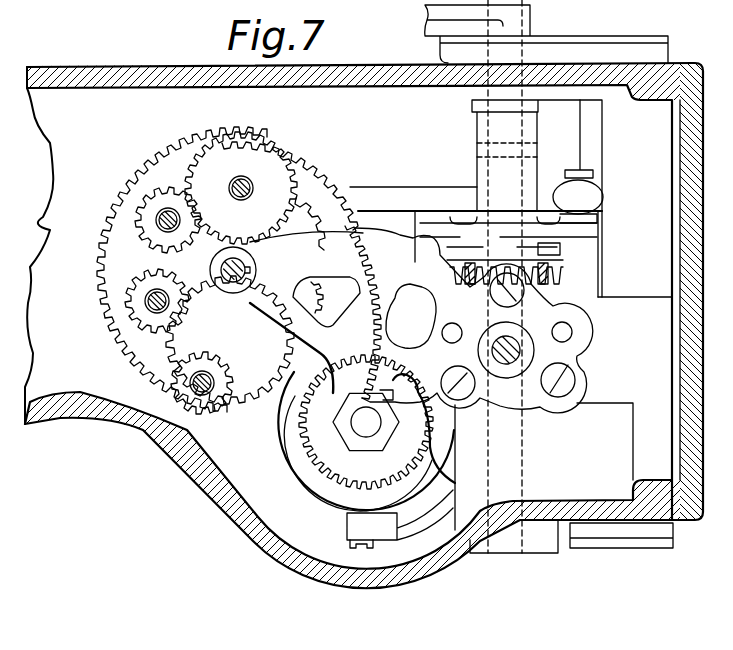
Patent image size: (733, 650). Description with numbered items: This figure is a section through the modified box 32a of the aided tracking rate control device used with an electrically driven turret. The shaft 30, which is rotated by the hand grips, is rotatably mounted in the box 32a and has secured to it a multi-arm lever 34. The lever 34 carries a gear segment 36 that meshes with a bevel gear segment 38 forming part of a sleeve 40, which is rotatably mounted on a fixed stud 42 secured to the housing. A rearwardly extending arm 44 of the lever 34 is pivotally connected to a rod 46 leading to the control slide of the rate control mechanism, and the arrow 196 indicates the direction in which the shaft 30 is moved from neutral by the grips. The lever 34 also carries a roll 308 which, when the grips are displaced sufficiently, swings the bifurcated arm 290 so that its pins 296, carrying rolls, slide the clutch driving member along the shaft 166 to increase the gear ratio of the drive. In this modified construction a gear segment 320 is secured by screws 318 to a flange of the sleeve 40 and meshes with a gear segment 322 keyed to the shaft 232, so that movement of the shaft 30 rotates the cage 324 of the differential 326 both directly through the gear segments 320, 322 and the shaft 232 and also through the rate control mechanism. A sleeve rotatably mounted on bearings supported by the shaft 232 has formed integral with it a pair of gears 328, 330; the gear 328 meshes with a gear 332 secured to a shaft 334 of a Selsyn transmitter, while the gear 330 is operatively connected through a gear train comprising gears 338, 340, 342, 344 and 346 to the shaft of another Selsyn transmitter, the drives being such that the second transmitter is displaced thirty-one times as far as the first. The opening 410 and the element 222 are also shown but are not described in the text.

The box 32a is at (137, 68).
The shaft 30 is at (517, 140).
The arrow 196 is at (508, 180).
The rod 46 is at (403, 193).
The multi-arm lever 34 is at (530, 233).
The rearwardly extending arm 44 is at (580, 232).
The gear segment 36 is at (580, 254).
The bevel gear segment 38 is at (560, 292).
The roll 308 is at (594, 285).
The gear 342 is at (130, 193).
The differential 326 is at (312, 165).
The gear 328 is at (298, 223).
The gear 346 is at (240, 143).
The gear 344 is at (187, 214).
The gear 330 is at (190, 280).
The gear 338 is at (131, 288).
The gear 340 is at (133, 310).
The cage 324 is at (247, 374).
The gear 332 is at (204, 411).
The shaft 334 is at (197, 400).
The shaft 232 is at (250, 263).
The gear segment 322 is at (349, 347).
The sleeve 40 is at (528, 341).
The fixed stud 42 is at (488, 332).
The aperture 410 is at (440, 270).
The screws 318 is at (560, 391).
The gear segment 320 is at (419, 371).
The shaft 166 is at (365, 423).
The gear 222 is at (317, 467).
The bifurcated arm 290 is at (433, 523).
The pins 296 is at (360, 540).